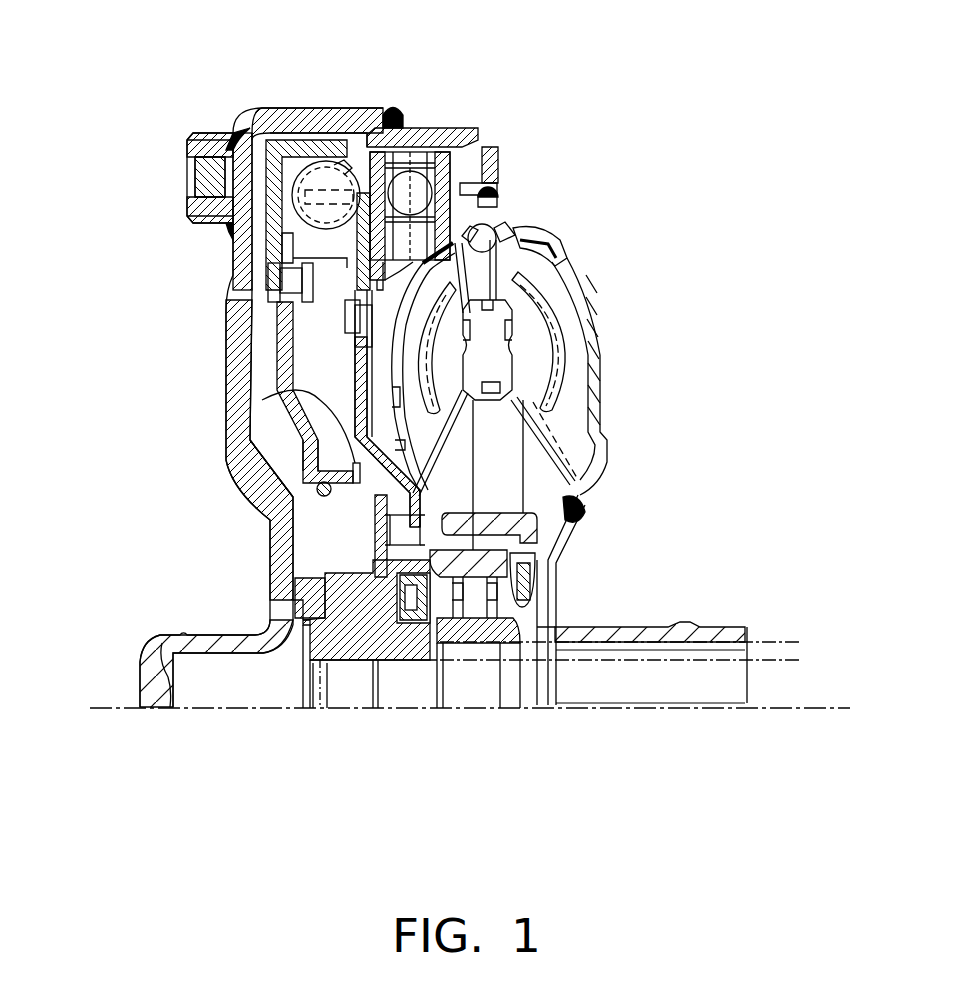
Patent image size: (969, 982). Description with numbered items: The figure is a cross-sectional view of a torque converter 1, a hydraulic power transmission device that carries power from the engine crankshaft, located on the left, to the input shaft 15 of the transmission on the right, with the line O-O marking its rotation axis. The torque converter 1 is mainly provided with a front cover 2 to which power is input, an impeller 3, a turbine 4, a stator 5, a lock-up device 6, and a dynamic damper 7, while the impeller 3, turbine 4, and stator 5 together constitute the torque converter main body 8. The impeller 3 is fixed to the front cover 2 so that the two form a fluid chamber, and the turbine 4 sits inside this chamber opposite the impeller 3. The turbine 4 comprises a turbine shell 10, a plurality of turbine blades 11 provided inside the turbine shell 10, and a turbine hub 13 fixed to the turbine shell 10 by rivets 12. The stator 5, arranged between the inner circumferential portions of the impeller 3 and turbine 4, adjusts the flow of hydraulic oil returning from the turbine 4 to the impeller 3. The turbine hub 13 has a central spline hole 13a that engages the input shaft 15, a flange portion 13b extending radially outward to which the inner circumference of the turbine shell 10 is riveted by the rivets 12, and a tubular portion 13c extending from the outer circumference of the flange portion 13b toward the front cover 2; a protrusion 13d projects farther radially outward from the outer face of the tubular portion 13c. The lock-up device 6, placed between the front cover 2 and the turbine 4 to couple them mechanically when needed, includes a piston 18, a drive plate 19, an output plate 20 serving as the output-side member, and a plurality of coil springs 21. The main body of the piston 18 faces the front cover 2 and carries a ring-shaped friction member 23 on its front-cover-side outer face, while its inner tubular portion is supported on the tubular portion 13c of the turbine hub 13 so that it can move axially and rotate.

The torque converter 1 is at (178, 98).
The front cover 2 is at (232, 288).
The impeller 3 is at (582, 242).
The turbine 4 is at (470, 228).
The stator 5 is at (600, 442).
The lock-up device 6 is at (268, 320).
The dynamic damper 7 is at (455, 158).
The torque converter main body 8 is at (577, 190).
The turbine shell 10 is at (494, 226).
The turbine blades 11 is at (448, 323).
The rivets 12 is at (370, 558).
The turbine hub 13 is at (310, 652).
The spline hole 13a is at (355, 662).
The flange portion 13b is at (378, 510).
The tubular portion 13c is at (258, 430).
The protrusion 13d is at (322, 396).
The input shaft 15 is at (578, 675).
The piston 18 is at (285, 357).
The drive plate 19 is at (250, 243).
The output plate 20 is at (360, 383).
The coil springs 21 is at (305, 188).
The friction member 23 is at (230, 158).